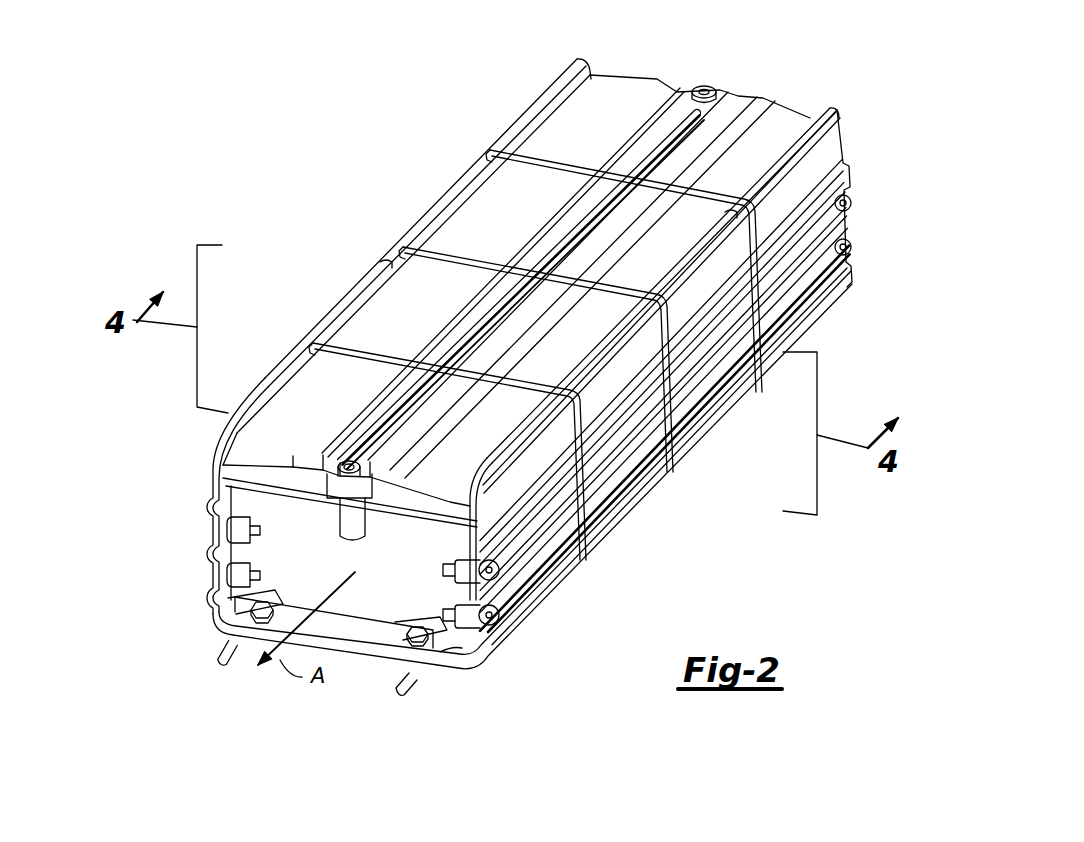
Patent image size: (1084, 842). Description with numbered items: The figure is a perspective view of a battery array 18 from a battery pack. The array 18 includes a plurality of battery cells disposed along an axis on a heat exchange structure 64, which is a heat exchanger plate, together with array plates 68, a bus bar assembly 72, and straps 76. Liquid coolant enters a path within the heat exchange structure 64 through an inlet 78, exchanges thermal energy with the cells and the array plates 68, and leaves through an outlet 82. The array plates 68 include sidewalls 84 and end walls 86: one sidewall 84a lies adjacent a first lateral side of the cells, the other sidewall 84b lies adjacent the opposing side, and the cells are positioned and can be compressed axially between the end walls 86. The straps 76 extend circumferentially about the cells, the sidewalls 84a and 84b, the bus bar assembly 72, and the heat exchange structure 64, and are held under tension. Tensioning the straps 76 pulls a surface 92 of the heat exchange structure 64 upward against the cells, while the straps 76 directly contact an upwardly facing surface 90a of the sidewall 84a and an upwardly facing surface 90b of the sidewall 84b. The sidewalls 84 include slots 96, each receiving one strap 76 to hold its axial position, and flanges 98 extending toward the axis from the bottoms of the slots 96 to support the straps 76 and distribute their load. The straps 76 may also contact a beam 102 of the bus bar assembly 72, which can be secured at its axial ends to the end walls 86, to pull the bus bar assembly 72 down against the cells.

The array 18 is at (722, 82).
The heat exchange structure 64 is at (460, 683).
The array plates 68 is at (513, 587).
The bus bar assembly 72 is at (508, 203).
The strap 76 is at (757, 347).
The inlet 78 is at (232, 660).
The outlet 82 is at (400, 697).
The sidewalls 84 is at (346, 318).
The sidewall 84a is at (603, 493).
The sidewall 84b is at (282, 377).
The end walls 86 is at (380, 607).
The upwardly facing surface 90a is at (813, 120).
The upwardly facing surface 90b is at (453, 190).
The surface 92 is at (457, 657).
The slots 96 is at (391, 236).
The flanges 98 is at (385, 262).
The beam 102 is at (689, 91).